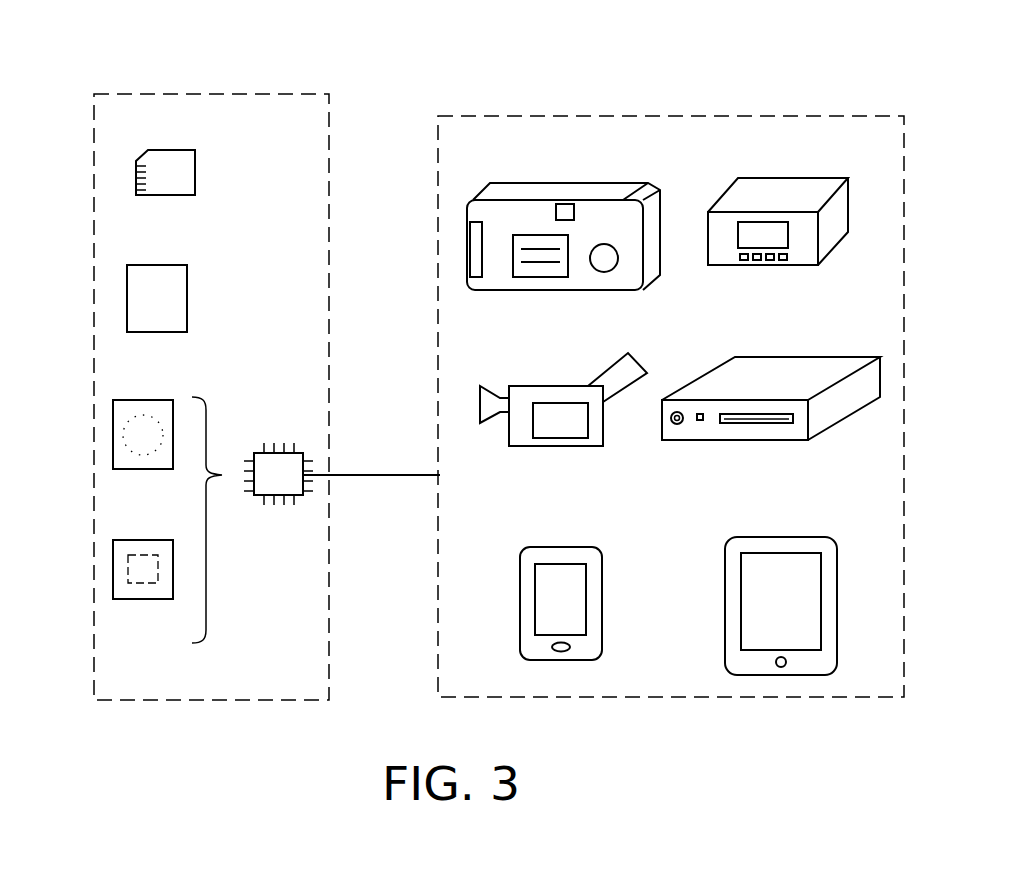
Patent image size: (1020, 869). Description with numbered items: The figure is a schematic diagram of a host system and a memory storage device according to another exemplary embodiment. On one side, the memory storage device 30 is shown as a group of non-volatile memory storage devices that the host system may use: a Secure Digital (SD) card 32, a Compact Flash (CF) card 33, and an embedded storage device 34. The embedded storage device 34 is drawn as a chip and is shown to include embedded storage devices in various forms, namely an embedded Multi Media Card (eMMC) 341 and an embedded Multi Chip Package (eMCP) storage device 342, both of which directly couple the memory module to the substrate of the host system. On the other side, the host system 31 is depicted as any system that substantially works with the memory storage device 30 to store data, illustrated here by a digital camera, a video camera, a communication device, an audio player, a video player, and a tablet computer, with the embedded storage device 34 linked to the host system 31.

The memory storage device 30 is at (201, 92).
The host system 31 is at (598, 114).
The Secure Digital (SD) card 32 is at (136, 180).
The Compact Flash (CF) card 33 is at (127, 302).
The embedded storage device 34 is at (278, 446).
The embedded Multi Media Card (eMMC) 341 is at (113, 435).
The embedded Multi Chip Package (eMCP) storage device 342 is at (113, 570).